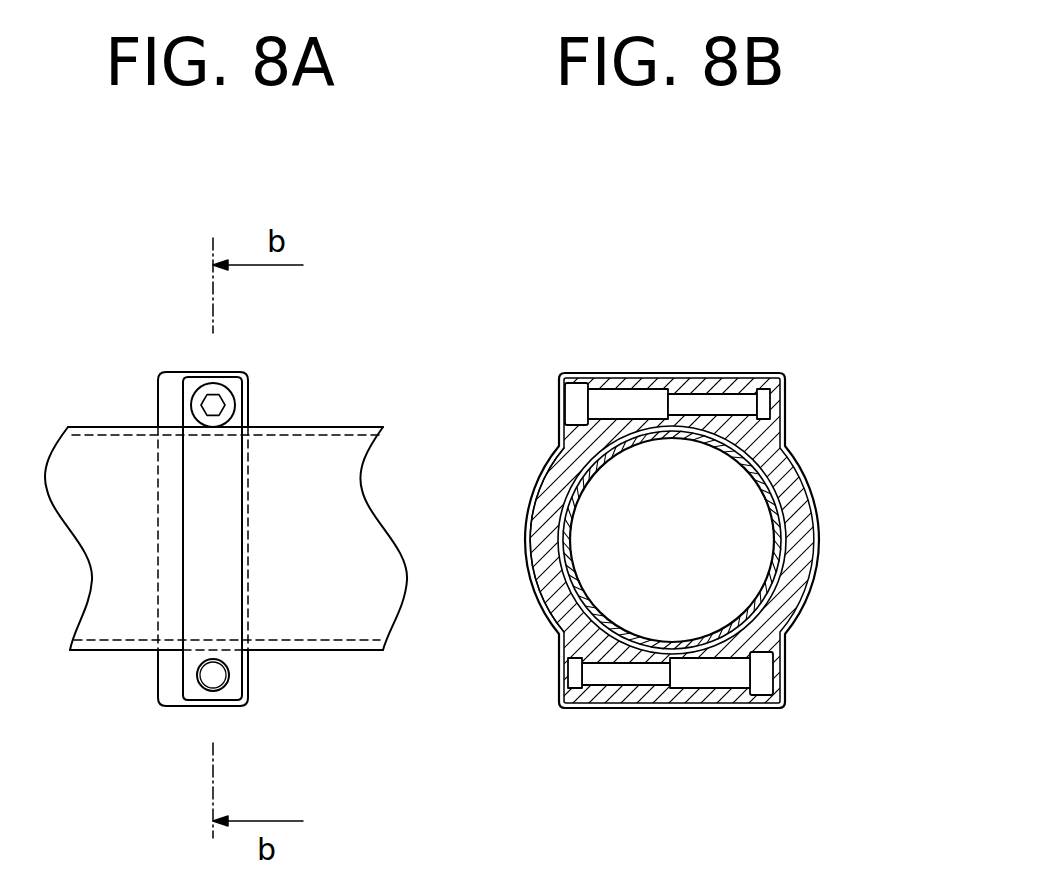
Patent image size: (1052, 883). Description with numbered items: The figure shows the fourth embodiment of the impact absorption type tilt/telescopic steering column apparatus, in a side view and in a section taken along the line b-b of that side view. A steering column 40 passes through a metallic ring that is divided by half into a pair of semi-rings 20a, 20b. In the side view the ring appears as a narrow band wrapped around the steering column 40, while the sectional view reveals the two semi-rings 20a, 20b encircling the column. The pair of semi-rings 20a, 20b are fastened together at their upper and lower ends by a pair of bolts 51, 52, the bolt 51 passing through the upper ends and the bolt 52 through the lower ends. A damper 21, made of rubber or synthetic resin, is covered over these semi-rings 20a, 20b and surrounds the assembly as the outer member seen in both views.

In FIG. 8A, the damper 21 is at (167, 393).
In FIG. 8B, the damper 21 is at (748, 372).
In FIG. 8A, the semi-ring 20a is at (232, 382).
In FIG. 8B, the semi-ring 20a is at (547, 605).
In FIG. 8B, the semi-ring 20b is at (793, 577).
In FIG. 8A, the steering column 40 is at (333, 652).
In FIG. 8B, the steering column 40 is at (793, 502).
In FIG. 8A, the bolt 51 is at (213, 405).
In FIG. 8B, the bolt 51 is at (627, 405).
In FIG. 8A, the bolt 52 is at (207, 672).
In FIG. 8B, the bolt 52 is at (710, 677).